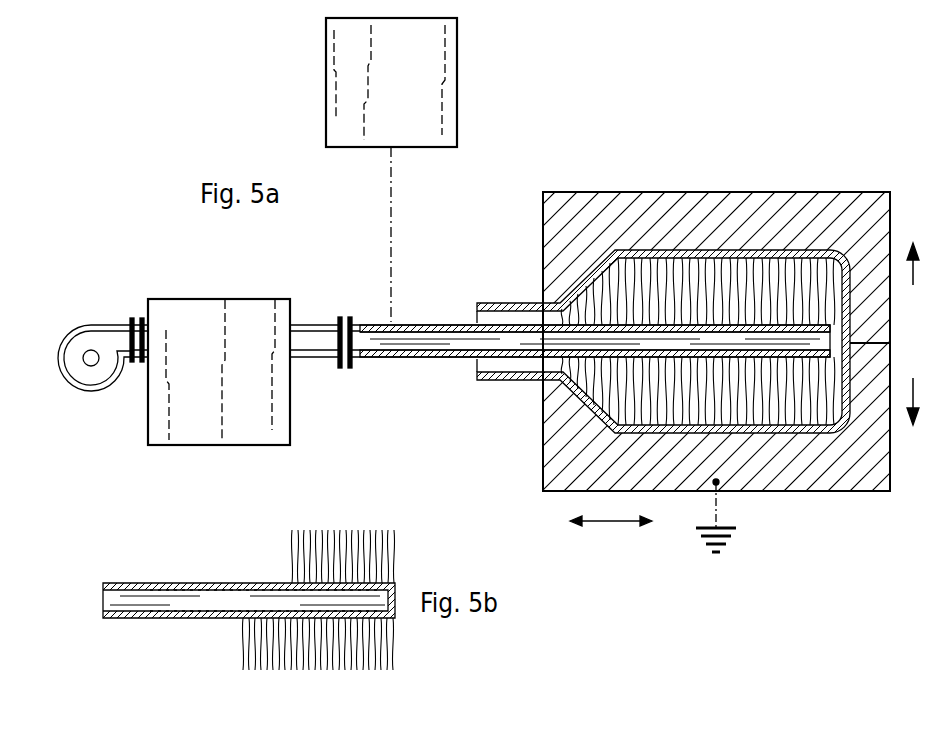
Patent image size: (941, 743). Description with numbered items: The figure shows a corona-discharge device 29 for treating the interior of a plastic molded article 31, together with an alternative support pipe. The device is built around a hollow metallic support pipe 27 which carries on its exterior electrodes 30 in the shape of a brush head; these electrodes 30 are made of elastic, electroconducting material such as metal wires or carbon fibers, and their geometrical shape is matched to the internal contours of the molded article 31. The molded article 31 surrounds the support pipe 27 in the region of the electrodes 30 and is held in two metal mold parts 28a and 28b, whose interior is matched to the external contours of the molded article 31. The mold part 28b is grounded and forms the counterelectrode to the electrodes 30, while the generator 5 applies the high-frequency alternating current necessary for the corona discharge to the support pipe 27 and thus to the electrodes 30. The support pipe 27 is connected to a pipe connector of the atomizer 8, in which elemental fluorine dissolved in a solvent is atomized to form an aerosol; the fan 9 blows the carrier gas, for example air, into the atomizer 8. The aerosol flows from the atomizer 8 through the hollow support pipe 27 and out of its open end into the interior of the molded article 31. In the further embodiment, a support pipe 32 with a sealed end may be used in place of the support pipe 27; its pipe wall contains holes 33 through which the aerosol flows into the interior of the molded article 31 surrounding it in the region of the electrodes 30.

In FIG. 5A, the generator 5 is at (447, 80).
In FIG. 5A, the fan 9 is at (87, 338).
In FIG. 5A, the atomizer 8 is at (282, 423).
In FIG. 5A, the support pipe 27 is at (432, 358).
In FIG. 5A, the plastic molded article 31 is at (504, 380).
In FIG. 5A, the corona-discharge device 29 is at (665, 265).
In FIG. 5A, the mold part 28a is at (796, 200).
In FIG. 5A, the mold part 28b is at (831, 475).
In FIG. 5A, the electrodes 30 is at (832, 292).
In FIG. 5B, the electrodes 30 is at (388, 560).
In FIG. 5B, the support pipe 32 is at (157, 583).
In FIG. 5B, the holes 33 is at (239, 583).